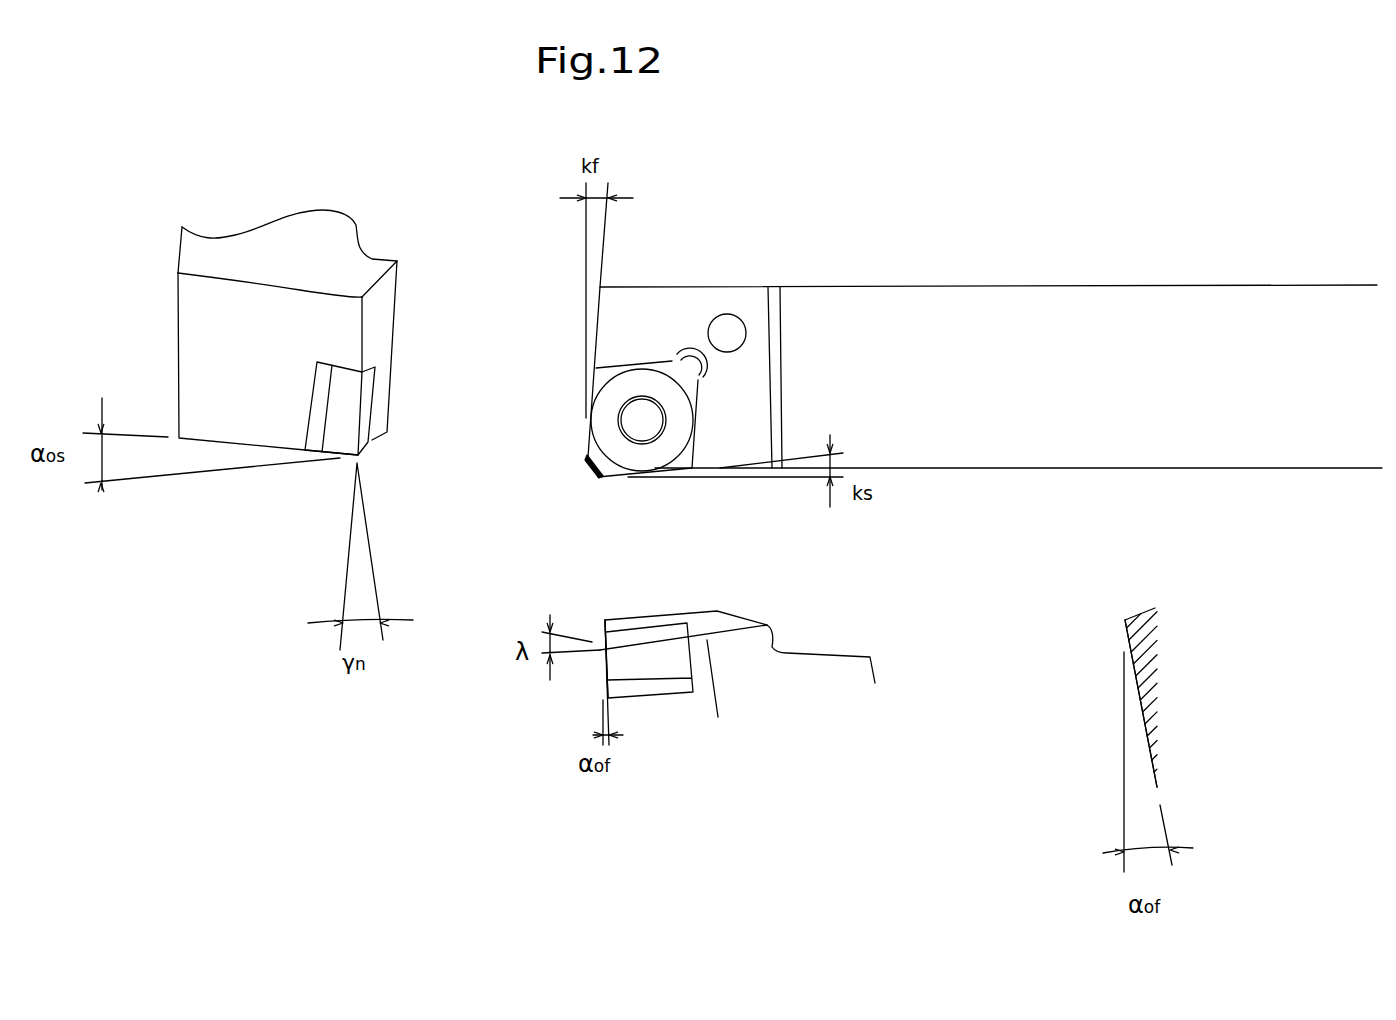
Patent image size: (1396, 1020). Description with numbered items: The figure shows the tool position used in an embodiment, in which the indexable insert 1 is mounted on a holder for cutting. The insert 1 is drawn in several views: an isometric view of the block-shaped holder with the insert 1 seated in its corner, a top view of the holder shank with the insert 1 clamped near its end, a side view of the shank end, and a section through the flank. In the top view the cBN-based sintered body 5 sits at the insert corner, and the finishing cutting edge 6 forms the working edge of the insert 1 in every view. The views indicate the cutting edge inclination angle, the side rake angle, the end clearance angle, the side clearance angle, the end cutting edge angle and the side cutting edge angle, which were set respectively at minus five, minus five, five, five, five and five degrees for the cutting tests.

The indexable insert 1 is at (368, 393).
The cBN-based sintered body 5 is at (600, 477).
The finishing cutting edge 6 is at (365, 455).